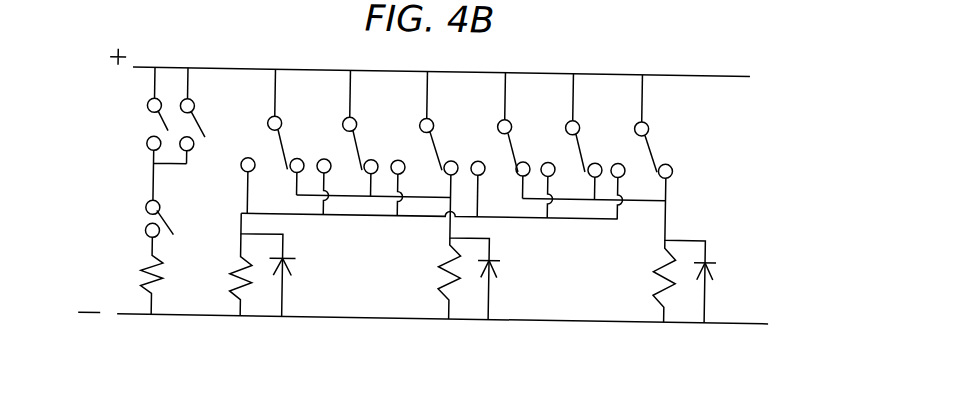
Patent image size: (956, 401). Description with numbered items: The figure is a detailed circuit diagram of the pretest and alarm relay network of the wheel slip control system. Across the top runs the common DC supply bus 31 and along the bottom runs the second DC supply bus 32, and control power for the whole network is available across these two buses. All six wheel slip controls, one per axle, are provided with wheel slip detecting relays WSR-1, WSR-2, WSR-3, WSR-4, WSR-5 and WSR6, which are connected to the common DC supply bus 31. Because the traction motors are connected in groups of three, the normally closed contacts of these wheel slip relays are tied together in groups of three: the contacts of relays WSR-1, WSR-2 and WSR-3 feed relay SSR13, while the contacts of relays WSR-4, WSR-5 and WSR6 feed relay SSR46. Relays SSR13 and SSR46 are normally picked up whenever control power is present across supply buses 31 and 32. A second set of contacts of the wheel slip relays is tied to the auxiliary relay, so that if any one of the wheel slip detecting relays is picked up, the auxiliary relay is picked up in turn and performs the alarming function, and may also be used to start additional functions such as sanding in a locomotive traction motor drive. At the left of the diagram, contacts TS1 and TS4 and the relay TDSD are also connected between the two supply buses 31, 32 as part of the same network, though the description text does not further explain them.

The common DC supply bus 31 is at (457, 67).
The DC supply bus 32 is at (556, 314).
The timer switch contact TS1 is at (142, 133).
The timer switch contact TS4 is at (207, 116).
The time delay relay coil TDSD is at (118, 257).
The wheel slip detecting relay WSR-1 is at (305, 142).
The wheel slip detecting relay WSR-2 is at (380, 143).
The wheel slip detecting relay WSR-3 is at (458, 144).
The wheel slip detecting relay WSR-4 is at (532, 146).
The wheel slip detecting relay WSR-5 is at (600, 147).
The wheel slip detecting relay WSR6 is at (674, 127).
The relay SSR13 is at (427, 247).
The relay SSR46 is at (648, 250).